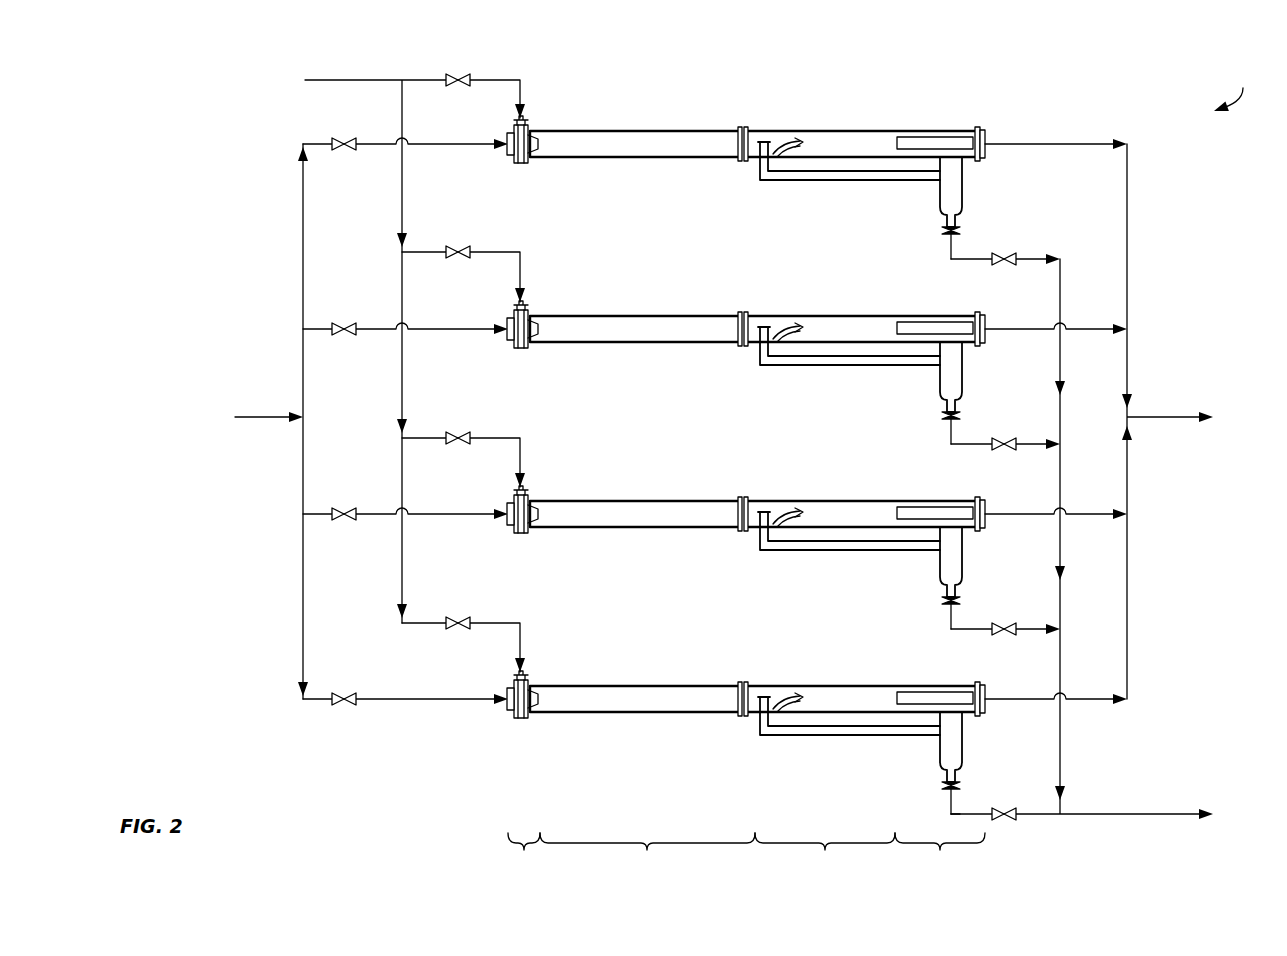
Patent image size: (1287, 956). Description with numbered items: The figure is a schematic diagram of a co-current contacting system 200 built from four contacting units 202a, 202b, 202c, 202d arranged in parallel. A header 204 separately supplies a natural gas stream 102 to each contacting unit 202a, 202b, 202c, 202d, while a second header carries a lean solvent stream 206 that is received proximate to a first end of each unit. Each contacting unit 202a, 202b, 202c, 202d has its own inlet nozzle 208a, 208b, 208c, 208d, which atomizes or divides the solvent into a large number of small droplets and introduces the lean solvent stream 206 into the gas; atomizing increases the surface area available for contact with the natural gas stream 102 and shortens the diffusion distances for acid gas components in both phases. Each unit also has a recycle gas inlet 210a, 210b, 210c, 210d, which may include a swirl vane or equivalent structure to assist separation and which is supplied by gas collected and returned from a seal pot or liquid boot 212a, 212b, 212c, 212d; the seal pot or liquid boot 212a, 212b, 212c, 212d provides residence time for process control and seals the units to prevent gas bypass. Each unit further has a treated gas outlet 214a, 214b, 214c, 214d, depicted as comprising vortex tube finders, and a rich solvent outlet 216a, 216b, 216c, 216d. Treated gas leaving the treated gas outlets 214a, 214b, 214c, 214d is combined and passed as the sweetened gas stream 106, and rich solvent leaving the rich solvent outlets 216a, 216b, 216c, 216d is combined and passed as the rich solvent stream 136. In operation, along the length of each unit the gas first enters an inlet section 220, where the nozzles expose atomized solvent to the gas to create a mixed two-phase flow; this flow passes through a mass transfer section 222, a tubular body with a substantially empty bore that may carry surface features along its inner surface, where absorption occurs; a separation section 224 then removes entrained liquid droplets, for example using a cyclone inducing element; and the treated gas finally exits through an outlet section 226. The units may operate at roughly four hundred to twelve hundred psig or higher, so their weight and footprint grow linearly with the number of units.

The co-current contacting system 200 is at (1239, 89).
The natural gas stream 102 is at (249, 417).
The sweetened gas stream 106 is at (1192, 421).
The rich solvent stream 136 is at (1106, 542).
The header 204 is at (303, 245).
The lean solvent stream 206 is at (395, 370).
The contacting unit 202a is at (752, 125).
The contacting unit 202b is at (752, 310).
The contacting unit 202c is at (752, 495).
The contacting unit 202d is at (752, 680).
The inlet nozzle 208a is at (508, 157).
The inlet nozzle 208b is at (508, 342).
The inlet nozzle 208c is at (508, 527).
The inlet nozzle 208d is at (487, 701).
The recycle gas inlet 210a is at (841, 134).
The recycle gas inlet 210b is at (841, 319).
The recycle gas inlet 210c is at (841, 504).
The recycle gas inlet 210d is at (841, 689).
The seal pot or liquid boot 212a is at (991, 208).
The seal pot or liquid boot 212b is at (991, 393).
The seal pot or liquid boot 212c is at (990, 578).
The seal pot or liquid boot 212d is at (991, 763).
The treated gas outlet 214a is at (1050, 130).
The treated gas outlet 214b is at (1050, 315).
The treated gas outlet 214c is at (1050, 500).
The treated gas outlet 214d is at (1050, 685).
The rich solvent outlet 216a is at (966, 252).
The rich solvent outlet 216b is at (966, 437).
The rich solvent outlet 216c is at (966, 622).
The rich solvent outlet 216d is at (916, 805).
The inlet section 220 is at (520, 853).
The mass transfer section 222 is at (647, 853).
The separation section 224 is at (825, 853).
The outlet section 226 is at (940, 853).